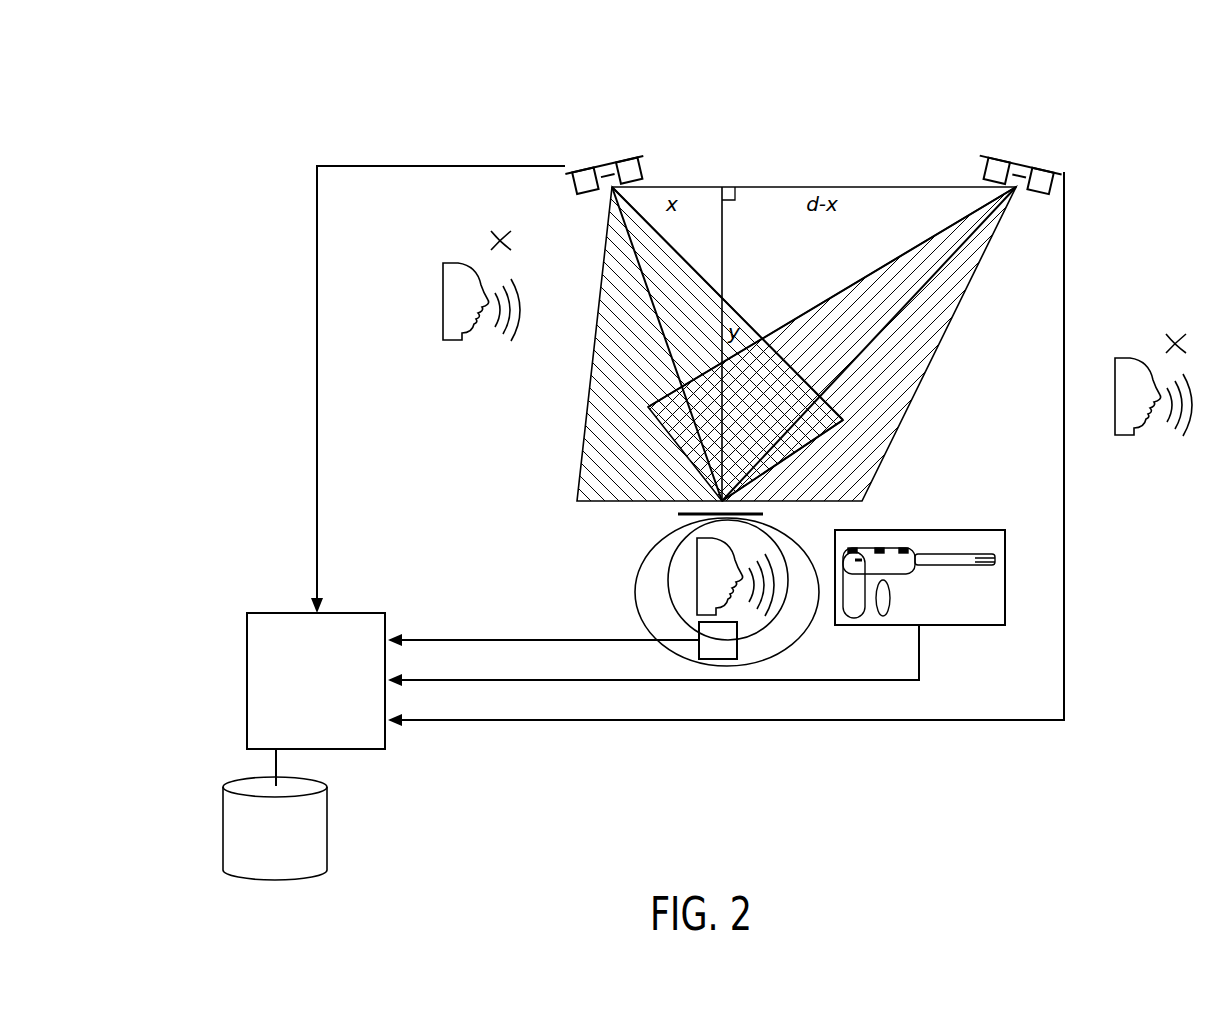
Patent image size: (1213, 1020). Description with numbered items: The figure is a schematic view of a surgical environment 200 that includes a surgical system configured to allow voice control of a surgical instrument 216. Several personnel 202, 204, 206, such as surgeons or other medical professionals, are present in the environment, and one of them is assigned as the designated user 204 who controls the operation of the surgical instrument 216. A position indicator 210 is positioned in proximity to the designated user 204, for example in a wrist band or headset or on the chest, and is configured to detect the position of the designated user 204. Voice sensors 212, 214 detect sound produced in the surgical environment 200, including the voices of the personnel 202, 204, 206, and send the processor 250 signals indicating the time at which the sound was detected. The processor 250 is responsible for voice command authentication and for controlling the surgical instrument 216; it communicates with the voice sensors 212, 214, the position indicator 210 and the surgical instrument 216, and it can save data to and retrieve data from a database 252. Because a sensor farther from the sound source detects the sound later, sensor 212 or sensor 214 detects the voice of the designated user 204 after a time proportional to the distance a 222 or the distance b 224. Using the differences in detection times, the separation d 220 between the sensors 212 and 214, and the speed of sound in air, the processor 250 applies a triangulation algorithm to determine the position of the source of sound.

The surgical environment 200 is at (885, 88).
The personnel 202 is at (443, 297).
The designated user 204 is at (697, 565).
The personnel 206 is at (1128, 357).
The position indicator 210 is at (699, 634).
The voice sensor 212 is at (630, 158).
The voice sensor 214 is at (1017, 162).
The surgical instrument 216 is at (975, 612).
The separation d 220 is at (784, 180).
The distance a 222 is at (614, 390).
The distance b 224 is at (877, 390).
The processor 250 is at (300, 684).
The database 252 is at (250, 784).